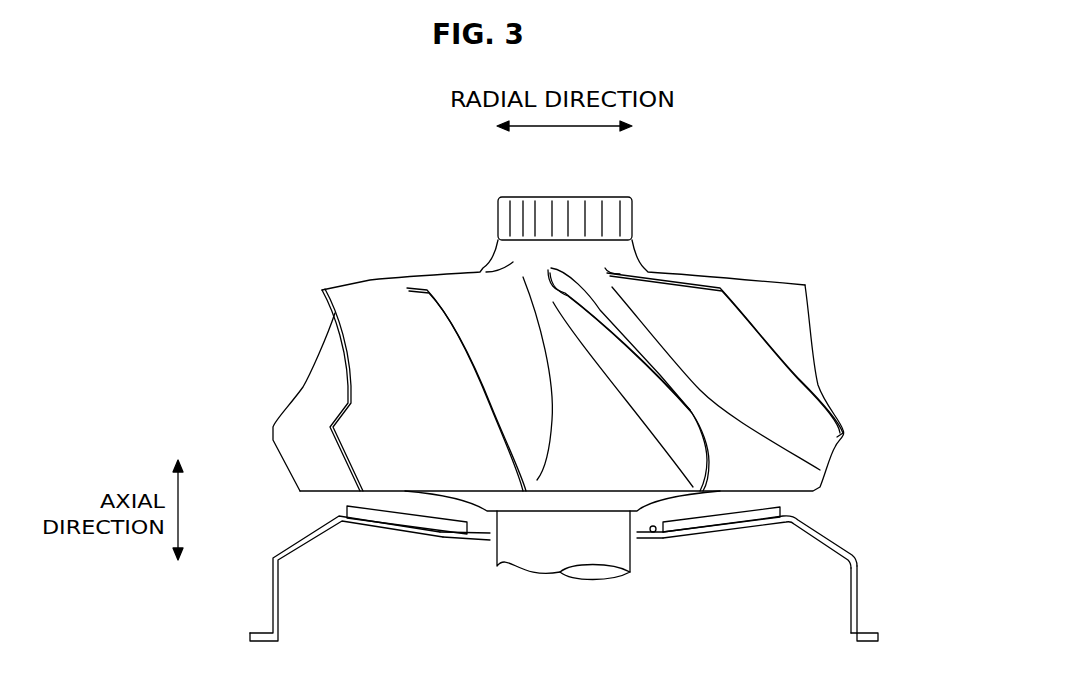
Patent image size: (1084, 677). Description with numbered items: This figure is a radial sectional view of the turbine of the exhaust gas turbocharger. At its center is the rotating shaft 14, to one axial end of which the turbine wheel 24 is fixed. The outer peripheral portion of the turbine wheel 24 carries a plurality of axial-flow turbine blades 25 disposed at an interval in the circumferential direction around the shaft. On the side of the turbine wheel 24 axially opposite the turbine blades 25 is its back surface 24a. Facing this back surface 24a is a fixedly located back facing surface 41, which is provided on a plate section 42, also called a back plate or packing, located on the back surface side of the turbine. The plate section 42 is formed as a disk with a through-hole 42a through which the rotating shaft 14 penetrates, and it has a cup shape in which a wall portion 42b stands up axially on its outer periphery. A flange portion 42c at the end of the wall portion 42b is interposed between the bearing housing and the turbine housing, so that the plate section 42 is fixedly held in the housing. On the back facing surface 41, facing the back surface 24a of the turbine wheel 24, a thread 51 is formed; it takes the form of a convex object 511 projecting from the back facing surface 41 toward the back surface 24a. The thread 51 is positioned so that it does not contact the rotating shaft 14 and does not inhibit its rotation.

The rotating shaft 14 is at (537, 550).
The turbine wheel 24 is at (628, 250).
The back surface 24a is at (688, 500).
The turbine blade 25 is at (303, 417).
The back facing surface 41 is at (658, 535).
The plate section 42 is at (837, 540).
The through-hole 42a is at (495, 537).
The wall portion 42b is at (863, 590).
The flange portion 42c is at (872, 632).
The thread 51 is at (567, 573).
The convex object 511 is at (360, 513).